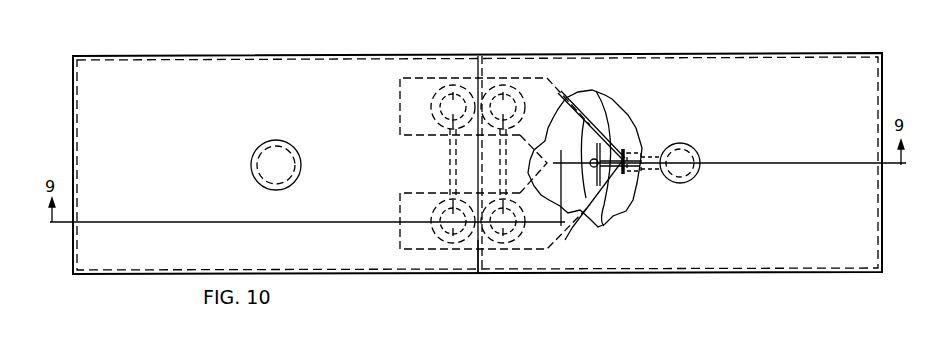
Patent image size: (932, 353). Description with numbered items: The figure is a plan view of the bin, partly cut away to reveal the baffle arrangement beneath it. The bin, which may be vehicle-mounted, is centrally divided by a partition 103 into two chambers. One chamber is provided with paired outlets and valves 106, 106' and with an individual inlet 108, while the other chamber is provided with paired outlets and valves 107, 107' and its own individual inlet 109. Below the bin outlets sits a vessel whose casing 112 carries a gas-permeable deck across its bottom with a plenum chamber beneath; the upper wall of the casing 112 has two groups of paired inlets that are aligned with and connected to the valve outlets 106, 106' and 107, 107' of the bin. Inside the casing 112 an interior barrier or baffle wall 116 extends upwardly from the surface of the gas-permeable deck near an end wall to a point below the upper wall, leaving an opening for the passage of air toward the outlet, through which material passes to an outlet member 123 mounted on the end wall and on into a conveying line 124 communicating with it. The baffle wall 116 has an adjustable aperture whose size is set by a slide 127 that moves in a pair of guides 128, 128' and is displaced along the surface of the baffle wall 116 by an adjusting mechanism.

The partition 103 is at (479, 256).
The outlet and valve 106 is at (447, 250).
The outlet and valve 106' is at (450, 77).
The outlet and valve 107 is at (503, 250).
The outlet and valve 107' is at (514, 77).
The inlet 108 is at (273, 140).
The inlet 109 is at (697, 150).
The casing 112 is at (572, 228).
The baffle wall 116 is at (609, 100).
The outlet member 123 is at (628, 172).
The conveying line 124 is at (650, 150).
The slide 127 is at (599, 210).
The guide 128 is at (626, 185).
The guide 128' is at (591, 113).